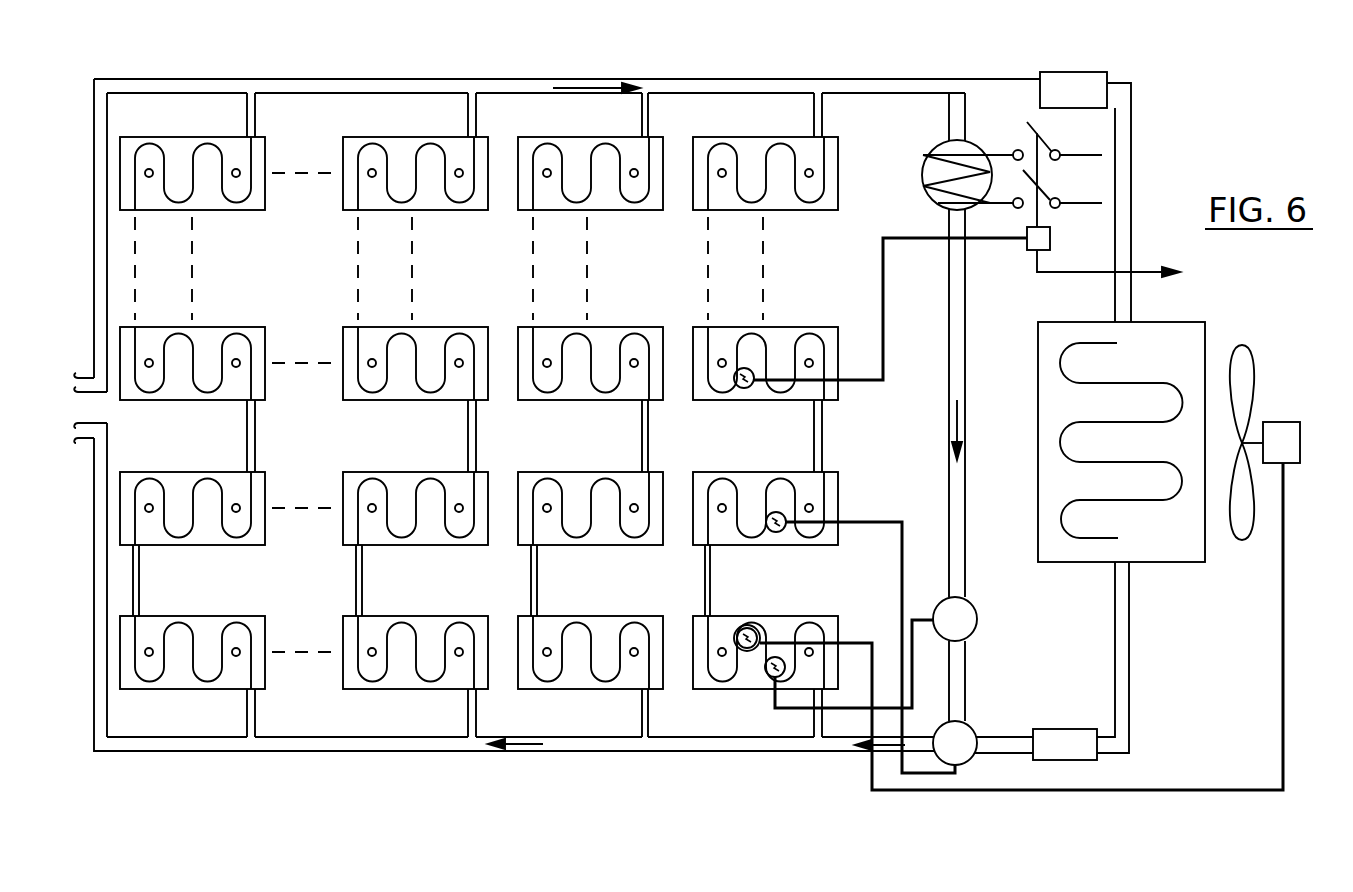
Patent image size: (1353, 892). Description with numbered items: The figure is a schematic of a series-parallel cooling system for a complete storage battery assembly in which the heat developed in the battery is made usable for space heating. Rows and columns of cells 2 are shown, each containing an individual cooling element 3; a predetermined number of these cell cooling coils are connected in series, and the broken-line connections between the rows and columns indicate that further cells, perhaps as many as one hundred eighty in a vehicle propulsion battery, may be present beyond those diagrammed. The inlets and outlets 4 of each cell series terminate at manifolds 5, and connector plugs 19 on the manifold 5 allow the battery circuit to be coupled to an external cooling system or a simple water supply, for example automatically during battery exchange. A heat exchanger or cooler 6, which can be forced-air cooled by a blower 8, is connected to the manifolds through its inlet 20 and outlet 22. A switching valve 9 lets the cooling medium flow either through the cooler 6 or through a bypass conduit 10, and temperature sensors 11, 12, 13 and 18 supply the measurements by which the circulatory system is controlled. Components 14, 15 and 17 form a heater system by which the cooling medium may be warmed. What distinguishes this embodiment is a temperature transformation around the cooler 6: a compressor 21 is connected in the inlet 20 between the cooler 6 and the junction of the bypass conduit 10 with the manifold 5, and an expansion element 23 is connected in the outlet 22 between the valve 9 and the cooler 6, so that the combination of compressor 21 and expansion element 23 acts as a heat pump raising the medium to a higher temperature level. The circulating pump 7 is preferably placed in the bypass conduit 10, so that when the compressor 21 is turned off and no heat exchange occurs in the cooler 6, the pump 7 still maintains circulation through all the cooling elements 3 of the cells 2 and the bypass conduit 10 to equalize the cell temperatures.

The cell 2 is at (130, 203).
The cooling element 3 is at (597, 680).
The inlets and outlets 4 is at (652, 118).
The manifold 5 is at (373, 85).
The heat exchanger 6 is at (1195, 343).
The circulating pump 7 is at (978, 618).
The blower 8 is at (1247, 368).
The switching valve 9 is at (965, 758).
The bypass conduit 10 is at (957, 380).
The temperature sensor 11 is at (773, 512).
The temperature sensor 12 is at (752, 625).
The temperature sensor 13 is at (748, 368).
The heater system component 14 is at (1052, 243).
The heater system component 15 is at (1040, 150).
The heater system component 17 is at (973, 157).
The temperature sensor 18 is at (770, 678).
The connector plug 19 is at (88, 393).
The inlet 20 is at (1131, 175).
The compressor 21 is at (1102, 73).
The outlet 22 is at (1133, 738).
The expansion element 23 is at (1085, 762).